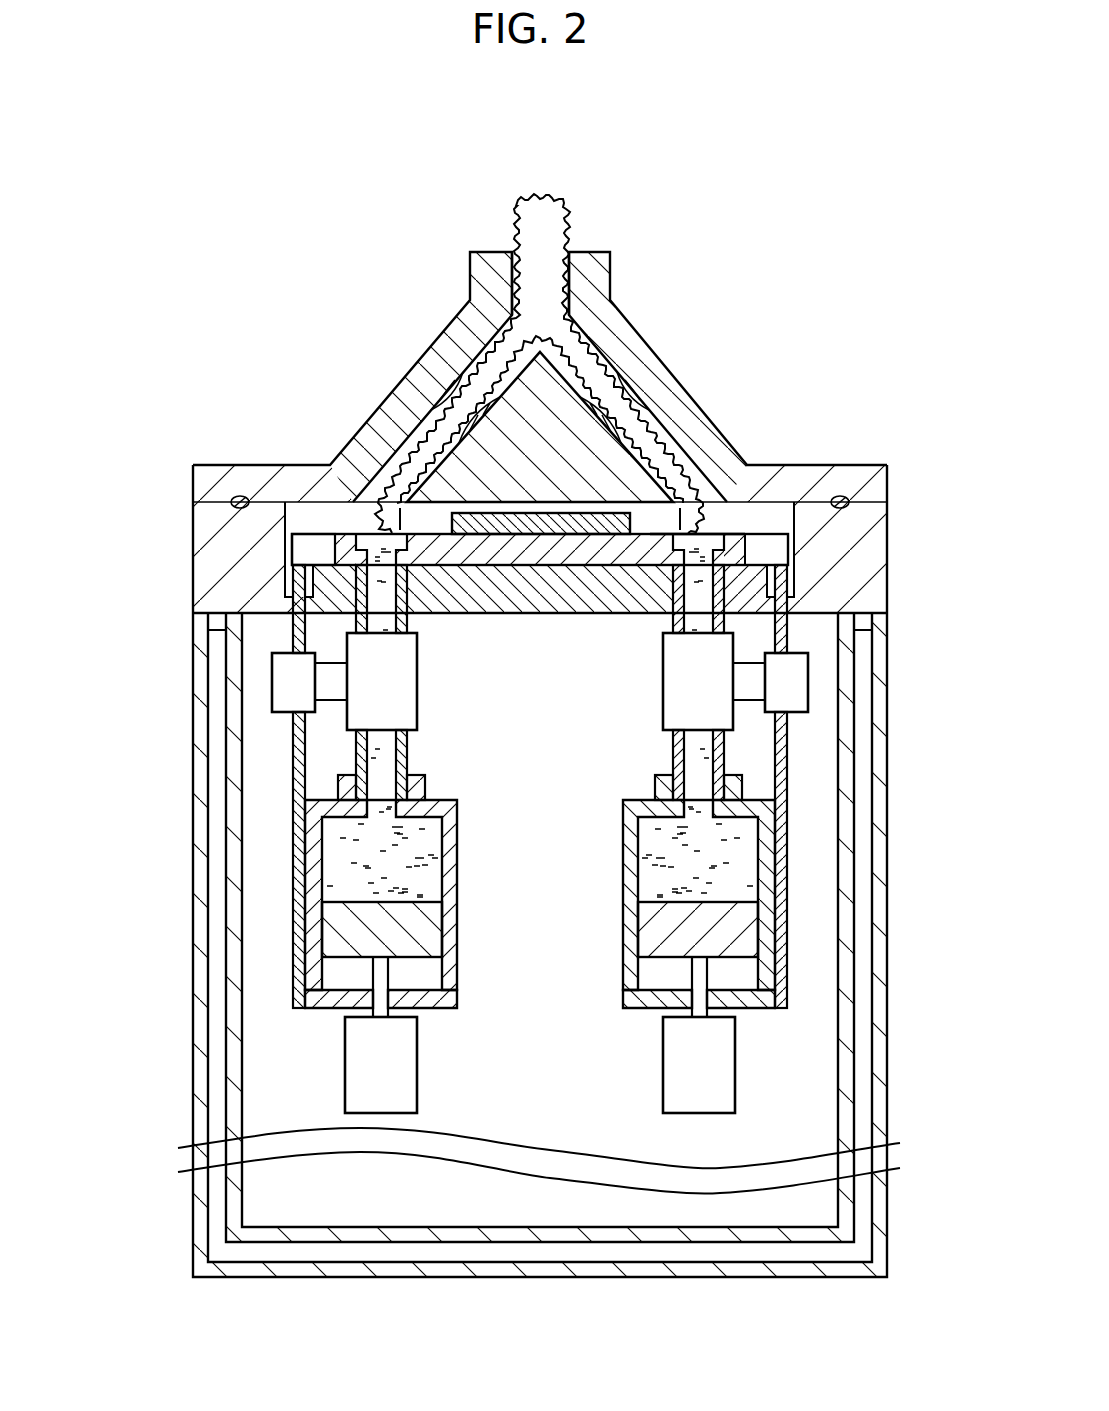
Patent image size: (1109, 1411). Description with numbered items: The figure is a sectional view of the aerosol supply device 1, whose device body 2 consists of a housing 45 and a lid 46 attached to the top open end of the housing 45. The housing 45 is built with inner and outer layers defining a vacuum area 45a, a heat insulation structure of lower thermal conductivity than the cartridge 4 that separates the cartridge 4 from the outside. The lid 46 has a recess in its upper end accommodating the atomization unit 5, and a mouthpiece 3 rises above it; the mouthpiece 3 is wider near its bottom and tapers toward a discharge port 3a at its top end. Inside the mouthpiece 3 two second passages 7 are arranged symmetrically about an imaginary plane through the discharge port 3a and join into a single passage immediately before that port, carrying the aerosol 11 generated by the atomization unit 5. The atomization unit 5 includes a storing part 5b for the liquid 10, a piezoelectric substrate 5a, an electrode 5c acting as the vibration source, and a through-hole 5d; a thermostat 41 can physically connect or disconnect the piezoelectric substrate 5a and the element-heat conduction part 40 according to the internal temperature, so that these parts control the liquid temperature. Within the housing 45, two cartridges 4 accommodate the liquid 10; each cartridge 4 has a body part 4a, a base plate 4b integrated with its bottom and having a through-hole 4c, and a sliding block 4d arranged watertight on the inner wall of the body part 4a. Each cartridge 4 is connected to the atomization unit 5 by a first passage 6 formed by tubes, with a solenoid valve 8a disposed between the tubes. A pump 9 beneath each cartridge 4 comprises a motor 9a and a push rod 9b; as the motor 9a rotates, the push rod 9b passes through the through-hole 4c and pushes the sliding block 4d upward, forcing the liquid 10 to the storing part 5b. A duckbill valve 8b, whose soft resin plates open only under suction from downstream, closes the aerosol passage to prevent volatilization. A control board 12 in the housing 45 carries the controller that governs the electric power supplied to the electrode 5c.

The aerosol supply device 1 is at (838, 253).
The device body 2 is at (908, 642).
The mouthpiece 3 is at (657, 317).
The discharge port 3a is at (563, 250).
The cartridge 4 is at (752, 787).
The body part 4a is at (785, 875).
The base plate 4b is at (720, 1003).
The through-hole 4c is at (700, 992).
The sliding block 4d is at (740, 930).
The atomization unit 5 is at (290, 535).
The piezoelectric substrate 5a is at (740, 550).
The storing part 5b is at (712, 528).
The electrode 5c is at (487, 513).
The through-hole 5d is at (700, 503).
The first passage 6 is at (300, 625).
The second passage 7 is at (628, 455).
The solenoid valve 8a is at (282, 687).
The duckbill valve 8b is at (445, 395).
The pump 9 is at (120, 952).
The motor 9a is at (345, 1065).
The push rod 9b is at (377, 978).
The liquid 10 is at (750, 850).
The aerosol 11 is at (530, 205).
The control board 12 is at (317, 582).
The element-heat conduction part 40 is at (788, 748).
The thermostat 41 is at (325, 552).
The housing 45 is at (880, 1205).
The vacuum area 45a is at (862, 1100).
The lid 46 is at (847, 588).